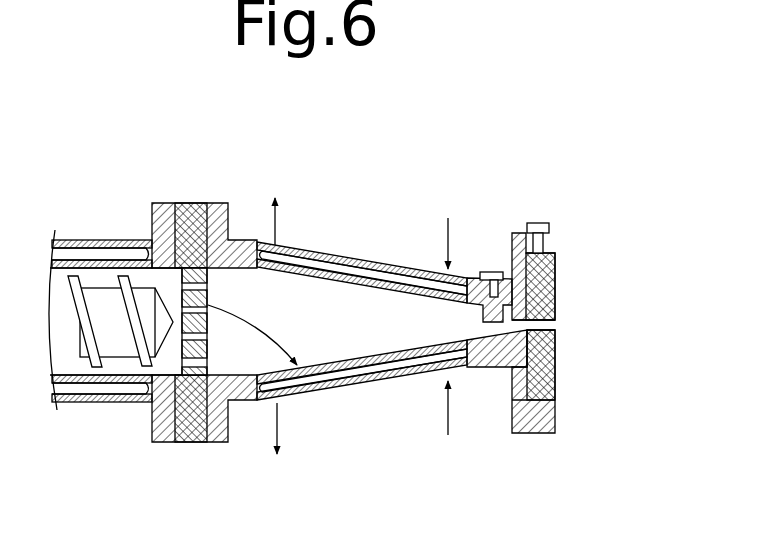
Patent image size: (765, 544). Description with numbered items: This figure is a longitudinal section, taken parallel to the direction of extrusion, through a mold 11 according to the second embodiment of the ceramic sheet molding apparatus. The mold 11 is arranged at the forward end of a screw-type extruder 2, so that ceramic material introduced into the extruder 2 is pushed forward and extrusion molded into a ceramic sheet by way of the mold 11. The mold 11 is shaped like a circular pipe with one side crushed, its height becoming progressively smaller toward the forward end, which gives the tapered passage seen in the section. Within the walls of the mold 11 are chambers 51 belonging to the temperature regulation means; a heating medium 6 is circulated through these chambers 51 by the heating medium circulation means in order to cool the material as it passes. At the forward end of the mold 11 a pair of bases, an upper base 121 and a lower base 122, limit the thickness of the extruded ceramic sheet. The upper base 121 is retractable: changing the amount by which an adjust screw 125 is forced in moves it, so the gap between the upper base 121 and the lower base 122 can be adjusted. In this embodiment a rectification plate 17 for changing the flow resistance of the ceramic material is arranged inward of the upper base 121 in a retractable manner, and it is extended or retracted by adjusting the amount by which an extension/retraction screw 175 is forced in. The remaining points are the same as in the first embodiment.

The screw-type extruder 2 is at (107, 231).
The heating medium 6 is at (272, 210).
The mold 11 is at (346, 174).
The chambers 51 is at (368, 265).
The rectification plate 17 is at (510, 318).
The upper base 121 is at (543, 285).
The lower base 122 is at (547, 372).
The adjust screw 125 is at (545, 241).
The extension/retraction screw 175 is at (497, 270).